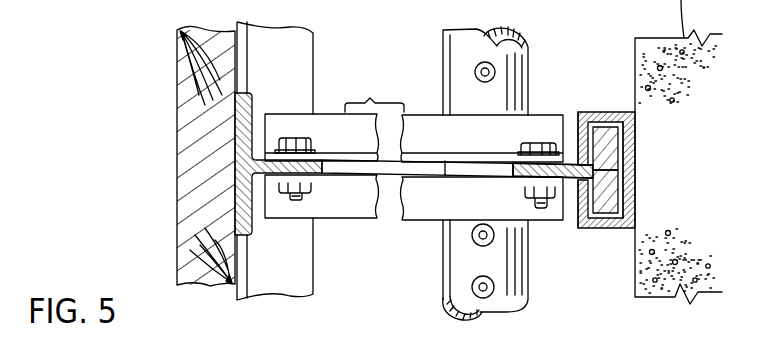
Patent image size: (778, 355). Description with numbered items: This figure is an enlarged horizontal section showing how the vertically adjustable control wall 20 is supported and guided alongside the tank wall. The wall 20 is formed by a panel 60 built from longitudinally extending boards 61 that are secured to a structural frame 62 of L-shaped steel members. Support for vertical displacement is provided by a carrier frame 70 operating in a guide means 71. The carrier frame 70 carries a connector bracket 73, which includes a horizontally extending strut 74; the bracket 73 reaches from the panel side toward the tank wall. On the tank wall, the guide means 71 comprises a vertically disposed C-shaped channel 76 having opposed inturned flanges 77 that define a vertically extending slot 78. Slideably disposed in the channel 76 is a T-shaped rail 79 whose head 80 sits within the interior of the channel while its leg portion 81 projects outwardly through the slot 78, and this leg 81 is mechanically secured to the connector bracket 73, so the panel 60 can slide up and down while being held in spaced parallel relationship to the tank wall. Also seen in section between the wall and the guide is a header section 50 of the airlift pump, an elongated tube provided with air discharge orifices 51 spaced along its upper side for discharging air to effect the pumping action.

The wall 20 is at (208, 172).
The panel 60 is at (177, 70).
The boards 61 is at (185, 243).
The structural frame 62 is at (302, 283).
The connector brackets 73 is at (428, 200).
The strut 74 is at (418, 125).
The leg portion 81 is at (513, 171).
The header section 50 is at (481, 165).
The air discharge orifice 51 is at (482, 62).
The carrier frame 70 is at (621, 204).
The C-shaped channel 76 is at (618, 230).
The inturned flanges 77 is at (576, 148).
The slot 78 is at (612, 162).
The T-shaped rail 79 is at (615, 197).
The head 80 is at (622, 131).
The guide means 71 is at (605, 100).